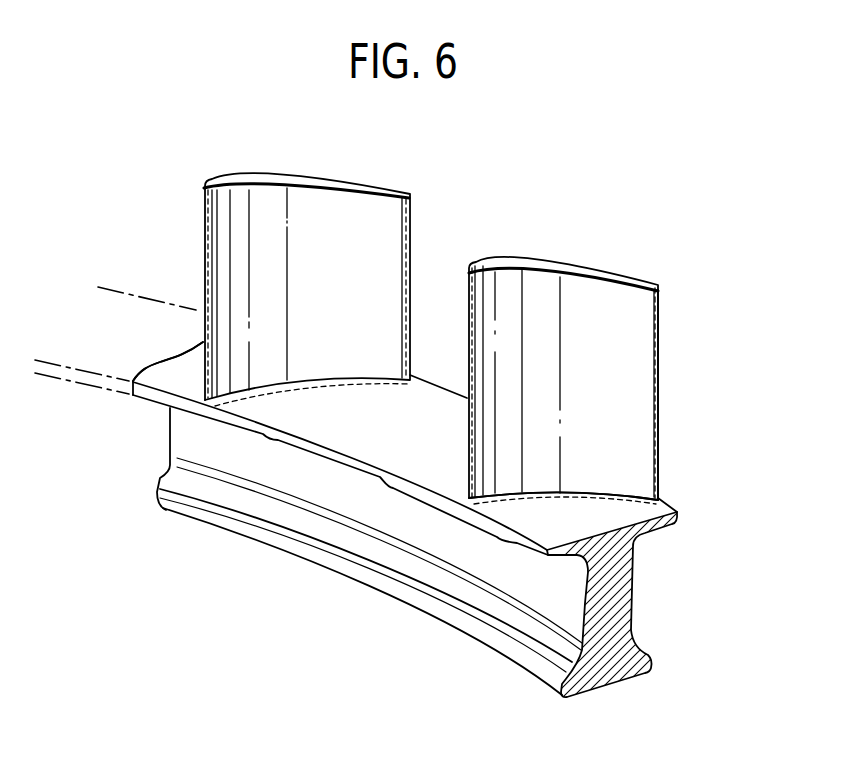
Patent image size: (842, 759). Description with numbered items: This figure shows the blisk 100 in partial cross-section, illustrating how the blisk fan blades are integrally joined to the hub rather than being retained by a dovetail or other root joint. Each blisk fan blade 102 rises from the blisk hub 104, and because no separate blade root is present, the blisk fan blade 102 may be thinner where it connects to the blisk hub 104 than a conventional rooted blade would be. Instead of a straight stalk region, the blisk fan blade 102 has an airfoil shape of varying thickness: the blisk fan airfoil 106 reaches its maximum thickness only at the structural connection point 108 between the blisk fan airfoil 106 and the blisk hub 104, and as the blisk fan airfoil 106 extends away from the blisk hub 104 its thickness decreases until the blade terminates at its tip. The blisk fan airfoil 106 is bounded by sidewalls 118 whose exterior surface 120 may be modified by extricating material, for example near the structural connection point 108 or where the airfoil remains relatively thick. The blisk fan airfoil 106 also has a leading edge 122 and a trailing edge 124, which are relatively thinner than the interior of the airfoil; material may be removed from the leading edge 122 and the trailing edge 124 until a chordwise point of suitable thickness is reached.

The blisk 100 is at (607, 327).
The blisk fan blade 102 is at (607, 358).
The blisk hub 104 is at (632, 635).
The blisk fan airfoil 106 is at (618, 300).
The structural connection point 108 is at (571, 495).
The sidewalls 118 is at (449, 367).
The exterior surface 120 is at (604, 366).
The leading edge 122 is at (464, 453).
The trailing edge 124 is at (660, 338).